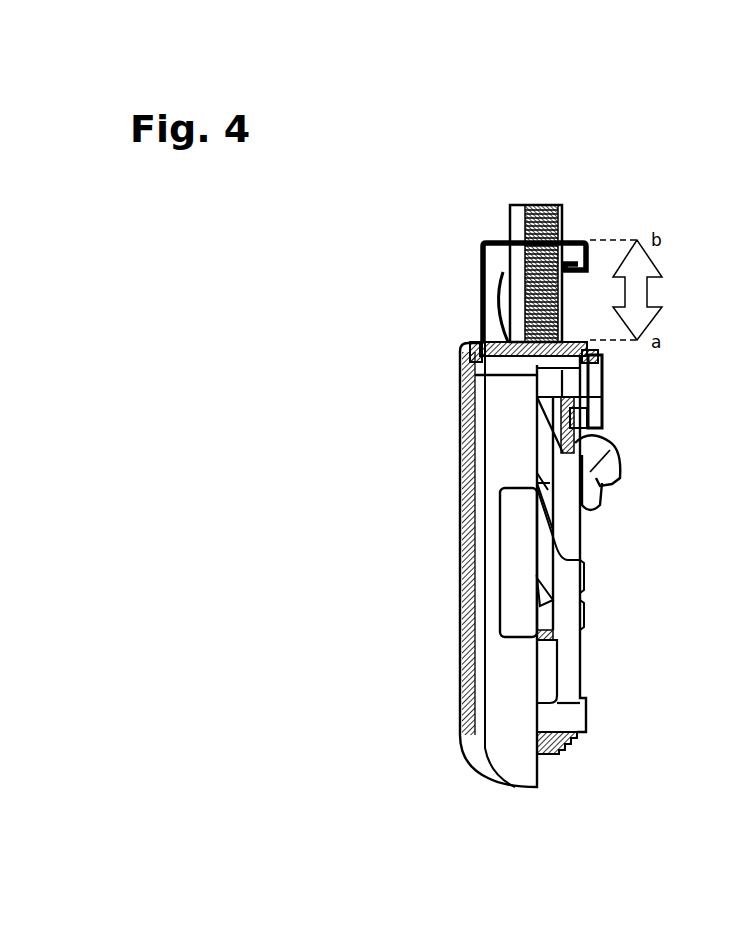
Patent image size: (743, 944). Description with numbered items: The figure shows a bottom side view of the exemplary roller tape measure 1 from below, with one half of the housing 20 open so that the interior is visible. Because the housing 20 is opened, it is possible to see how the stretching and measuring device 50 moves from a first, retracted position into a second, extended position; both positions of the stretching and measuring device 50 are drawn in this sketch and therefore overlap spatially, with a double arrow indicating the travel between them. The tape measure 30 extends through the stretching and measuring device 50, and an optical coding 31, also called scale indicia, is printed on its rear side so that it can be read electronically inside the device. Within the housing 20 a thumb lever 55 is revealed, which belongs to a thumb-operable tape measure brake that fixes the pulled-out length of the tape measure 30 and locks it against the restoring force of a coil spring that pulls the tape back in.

The roller tape measure 1 is at (670, 186).
The housing 20 is at (500, 423).
The tape measure 30 is at (532, 203).
The optical coding 31 is at (548, 213).
The stretching and measuring device 50 is at (495, 283).
The thumb lever 55 is at (620, 447).